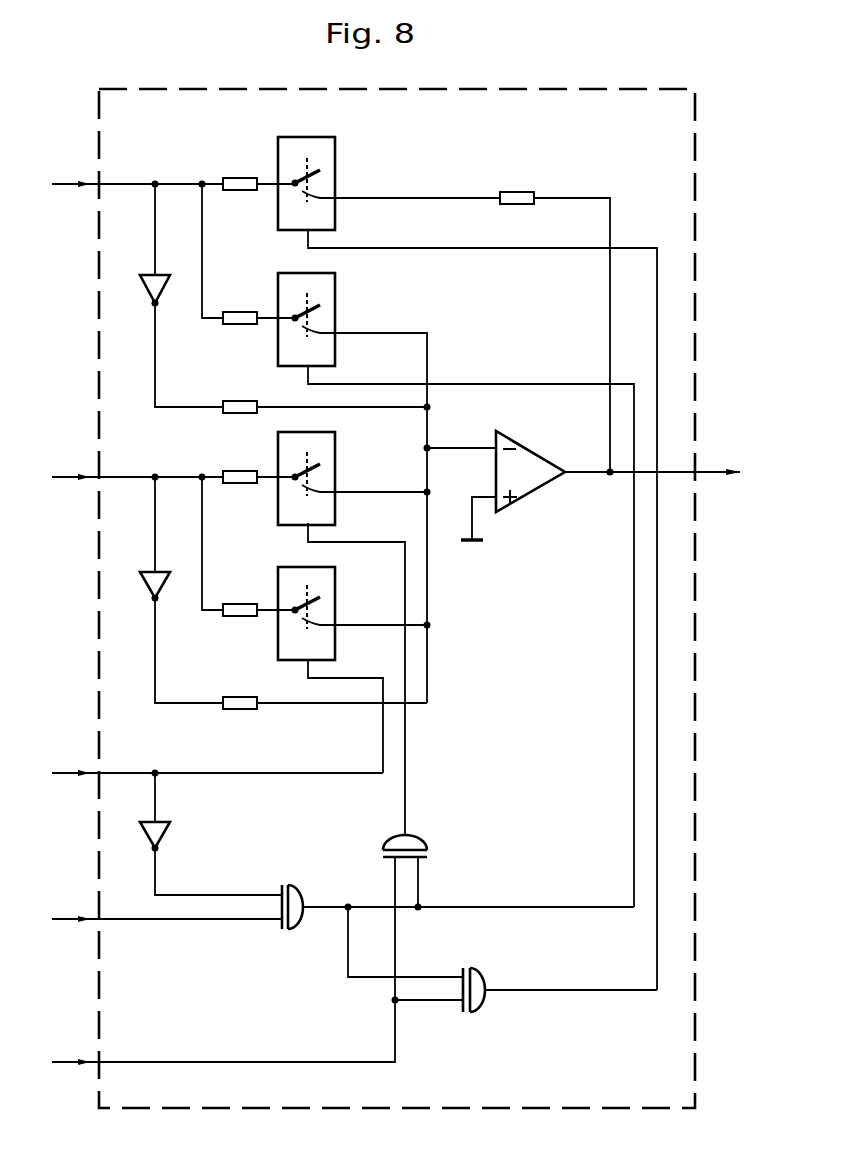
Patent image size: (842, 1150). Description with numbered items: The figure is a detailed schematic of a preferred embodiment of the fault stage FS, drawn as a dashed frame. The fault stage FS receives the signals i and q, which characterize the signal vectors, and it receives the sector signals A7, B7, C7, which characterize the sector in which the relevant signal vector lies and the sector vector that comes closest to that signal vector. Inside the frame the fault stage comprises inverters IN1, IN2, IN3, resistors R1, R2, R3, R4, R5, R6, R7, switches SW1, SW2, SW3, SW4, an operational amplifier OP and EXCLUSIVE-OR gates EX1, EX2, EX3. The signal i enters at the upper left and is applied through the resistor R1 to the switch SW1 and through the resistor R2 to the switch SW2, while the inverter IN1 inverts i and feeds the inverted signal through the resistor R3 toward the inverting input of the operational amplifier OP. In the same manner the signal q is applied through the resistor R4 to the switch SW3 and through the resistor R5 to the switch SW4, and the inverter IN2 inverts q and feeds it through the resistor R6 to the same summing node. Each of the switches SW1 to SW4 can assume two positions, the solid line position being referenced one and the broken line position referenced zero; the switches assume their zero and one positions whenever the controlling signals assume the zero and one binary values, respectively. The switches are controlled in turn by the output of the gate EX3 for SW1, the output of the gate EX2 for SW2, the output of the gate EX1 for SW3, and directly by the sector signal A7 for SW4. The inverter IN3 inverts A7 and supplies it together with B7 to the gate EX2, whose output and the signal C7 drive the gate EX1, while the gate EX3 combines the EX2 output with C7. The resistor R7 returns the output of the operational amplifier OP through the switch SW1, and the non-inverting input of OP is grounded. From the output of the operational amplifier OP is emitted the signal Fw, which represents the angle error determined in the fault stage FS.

The fault stage FS is at (508, 89).
The signal i is at (75, 168).
The signal q is at (75, 458).
The sector signal A7 is at (75, 757).
The sector signal B7 is at (75, 905).
The sector signal C7 is at (75, 1047).
The angle error signal Fw is at (717, 455).
The resistor R1 is at (240, 169).
The resistor R2 is at (240, 303).
The resistor R3 is at (240, 392).
The resistor R4 is at (240, 461).
The resistor R5 is at (240, 595).
The resistor R6 is at (240, 688).
The resistor R7 is at (517, 182).
The switch SW1 is at (309, 136).
The switch SW2 is at (309, 272).
The switch SW3 is at (338, 446).
The switch SW4 is at (308, 566).
The inverter IN1 is at (136, 293).
The inverter IN2 is at (136, 588).
The inverter IN3 is at (136, 834).
The EXCLUSIVE-OR gate EX1 is at (422, 845).
The EXCLUSIVE-OR gate EX2 is at (290, 890).
The EXCLUSIVE-OR gate EX3 is at (469, 973).
The operational amplifier OP is at (533, 494).